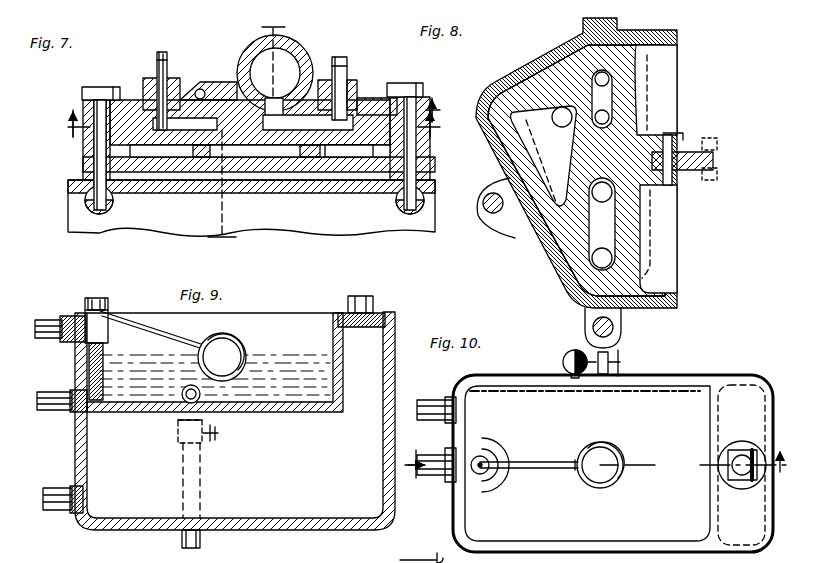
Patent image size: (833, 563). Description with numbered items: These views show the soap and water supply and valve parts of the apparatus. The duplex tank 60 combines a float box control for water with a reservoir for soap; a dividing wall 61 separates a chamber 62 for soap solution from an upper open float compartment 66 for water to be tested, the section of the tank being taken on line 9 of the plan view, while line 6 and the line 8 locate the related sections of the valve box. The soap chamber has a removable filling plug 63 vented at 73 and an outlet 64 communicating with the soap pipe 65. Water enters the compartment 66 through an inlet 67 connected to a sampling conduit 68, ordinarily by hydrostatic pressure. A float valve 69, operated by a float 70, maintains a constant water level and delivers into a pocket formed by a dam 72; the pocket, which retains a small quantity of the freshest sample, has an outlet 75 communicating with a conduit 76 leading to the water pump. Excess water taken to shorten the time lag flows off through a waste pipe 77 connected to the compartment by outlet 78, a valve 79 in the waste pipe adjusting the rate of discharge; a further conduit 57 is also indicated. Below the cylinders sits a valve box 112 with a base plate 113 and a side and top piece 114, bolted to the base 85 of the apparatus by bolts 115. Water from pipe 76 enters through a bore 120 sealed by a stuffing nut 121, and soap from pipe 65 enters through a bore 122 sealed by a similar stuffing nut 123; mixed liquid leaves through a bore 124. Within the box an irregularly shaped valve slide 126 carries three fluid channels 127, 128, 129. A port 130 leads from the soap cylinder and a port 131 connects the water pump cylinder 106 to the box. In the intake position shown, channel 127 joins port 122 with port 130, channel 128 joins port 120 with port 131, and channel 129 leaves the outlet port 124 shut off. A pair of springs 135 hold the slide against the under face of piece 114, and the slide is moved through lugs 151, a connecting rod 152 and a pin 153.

In FIG. 7, the section line 6- 6 is at (246, 133).
In FIG. 7, the section line 8— 8 is at (248, 123).
In FIG. 8, the section line 8— 8 is at (438, 114).
In FIG. 9, the section line 9— 9 is at (406, 469).
In FIG. 10, the section line 9— 9 is at (597, 464).
In FIG. 10, the conduit 57 is at (421, 553).
In FIG. 9, the duplex tank 60 is at (396, 332).
In FIG. 10, the duplex tank 60 is at (708, 378).
In FIG. 9, the dividing wall 61 is at (345, 374).
In FIG. 9, the chamber for soap solution 62 is at (386, 396).
In FIG. 10, the chamber for soap solution 62 is at (421, 375).
In FIG. 9, the removable filling plug 63 is at (378, 312).
In FIG. 9, the outlet 64 is at (86, 525).
In FIG. 7, the soap pipe 65 is at (168, 76).
In FIG. 9, the soap pipe 65 is at (55, 488).
In FIG. 9, the float compartment 66 is at (300, 322).
In FIG. 9, the inlet 67 is at (62, 320).
In FIG. 9, the sampling conduit 68 is at (63, 342).
In FIG. 9, the float valve 69 is at (108, 315).
In FIG. 9, the float 70 is at (180, 345).
In FIG. 10, the float 70 is at (585, 458).
In FIG. 9, the dam 72 is at (105, 375).
In FIG. 10, the dam 72 is at (486, 444).
In FIG. 9, the vent 73 is at (360, 296).
In FIG. 10, the vent 73 is at (730, 465).
In FIG. 9, the pocket outlet 75 is at (70, 396).
In FIG. 7, the water conduit 76 is at (344, 70).
In FIG. 9, the water conduit 76 is at (75, 412).
In FIG. 9, the waste pipe 77 is at (108, 412).
In FIG. 9, the waste outlet 78 is at (172, 412).
In FIG. 10, the waste outlet 78 is at (563, 366).
In FIG. 9, the waste valve 79 is at (220, 433).
In FIG. 10, the waste valve 79 is at (621, 362).
In FIG. 7, the base 85 is at (80, 212).
In FIG. 7, the water pump cylinder 106 is at (298, 55).
In FIG. 7, the valve box 112 is at (72, 168).
In FIG. 8, the base plate 113 is at (478, 152).
In FIG. 7, the side and top piece 114 is at (120, 148).
In FIG. 7, the bolts 115 is at (98, 88).
In FIG. 8, the bolts 115 is at (486, 210).
In FIG. 7, the water bore 120 is at (367, 100).
In FIG. 8, the water bore 120 is at (612, 262).
In FIG. 7, the stuffing nut 121 is at (350, 88).
In FIG. 7, the soap bore 122 is at (195, 84).
In FIG. 8, the soap bore 122 is at (630, 70).
In FIG. 7, the stuffing nut 123 is at (158, 90).
In FIG. 8, the outlet bore 124 is at (512, 150).
In FIG. 7, the valve slide 126 is at (349, 151).
In FIG. 8, the valve slide 126 is at (672, 58).
In FIG. 7, the fluid channel 127 is at (185, 124).
In FIG. 8, the fluid channel 127 is at (608, 95).
In FIG. 7, the fluid channel 128 is at (308, 115).
In FIG. 8, the fluid channel 128 is at (640, 222).
In FIG. 8, the fluid channel 129 is at (567, 177).
In FIG. 7, the soap port 130 is at (204, 92).
In FIG. 8, the soap port 130 is at (640, 112).
In FIG. 7, the water port 131 is at (275, 73).
In FIG. 8, the water port 131 is at (612, 192).
In FIG. 7, the springs 135 is at (200, 157).
In FIG. 8, the lugs 151 is at (675, 146).
In FIG. 8, the connecting rod 152 is at (720, 156).
In FIG. 8, the pin 153 is at (675, 128).